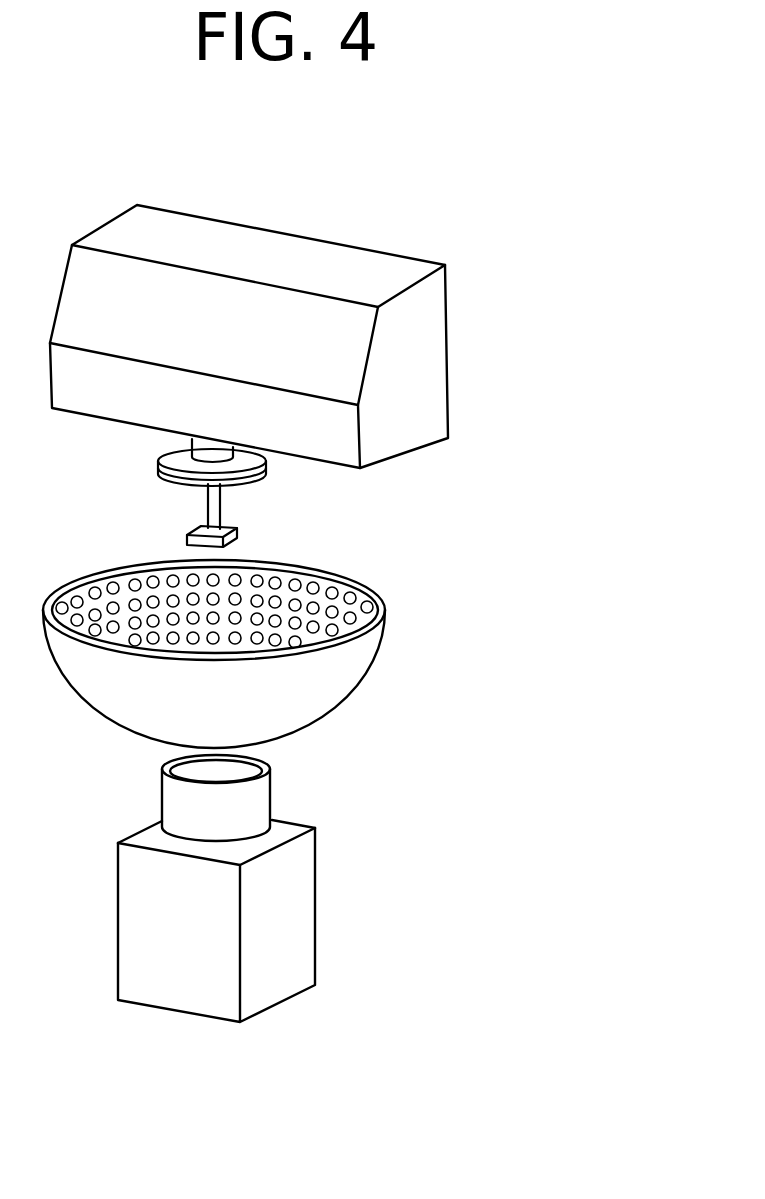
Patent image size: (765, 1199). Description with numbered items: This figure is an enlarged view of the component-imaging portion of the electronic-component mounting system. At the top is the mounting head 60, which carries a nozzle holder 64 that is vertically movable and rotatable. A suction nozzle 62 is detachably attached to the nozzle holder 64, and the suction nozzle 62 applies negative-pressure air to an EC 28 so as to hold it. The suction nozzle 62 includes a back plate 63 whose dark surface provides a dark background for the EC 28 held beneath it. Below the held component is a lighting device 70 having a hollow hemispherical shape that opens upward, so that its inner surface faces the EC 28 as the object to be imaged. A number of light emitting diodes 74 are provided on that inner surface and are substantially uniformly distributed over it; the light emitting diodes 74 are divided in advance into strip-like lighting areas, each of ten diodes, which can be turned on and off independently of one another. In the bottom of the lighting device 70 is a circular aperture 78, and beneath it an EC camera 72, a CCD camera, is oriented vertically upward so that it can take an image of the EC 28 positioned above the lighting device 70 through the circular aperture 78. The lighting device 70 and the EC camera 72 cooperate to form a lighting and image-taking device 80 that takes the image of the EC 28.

The mounting head 60 is at (517, 345).
The nozzle holder 64 is at (177, 456).
The back plate 63 is at (245, 478).
The suction nozzle 62 is at (212, 502).
The EC 28 is at (237, 532).
The lighting device 70 is at (347, 678).
The light emitting diodes 74 is at (98, 592).
The circular aperture 78 is at (150, 745).
The EC camera 72 is at (322, 862).
The lighting and image-taking device 80 is at (432, 788).